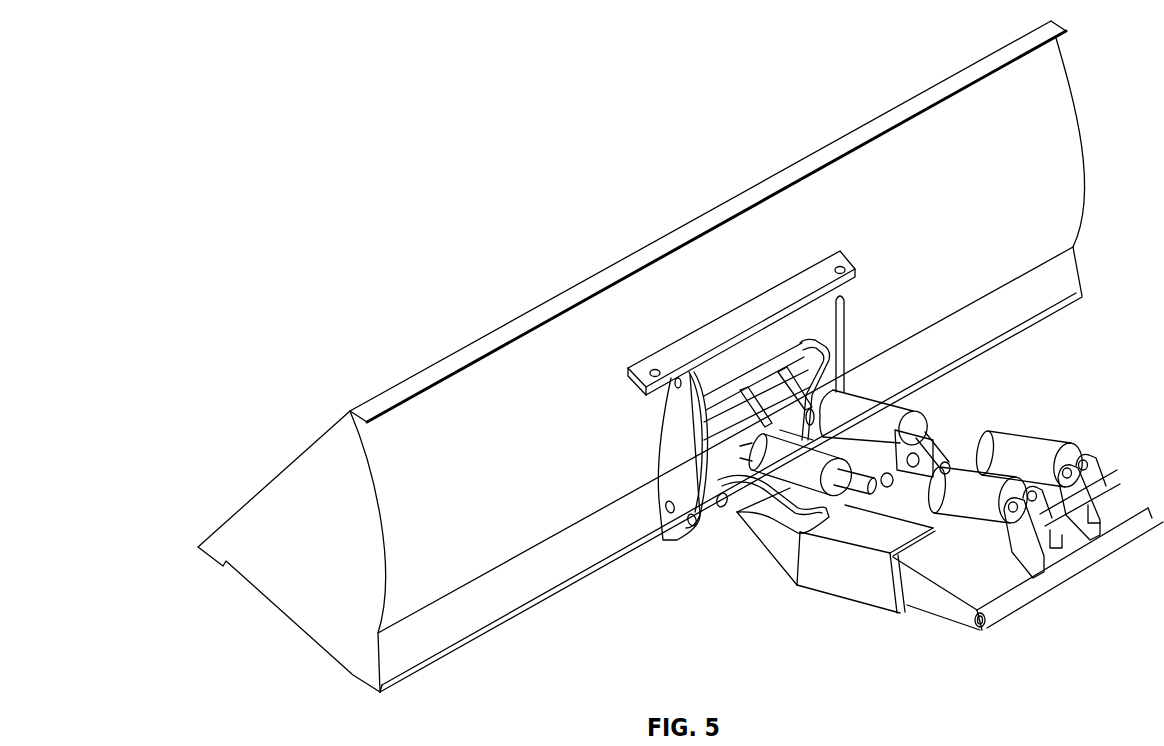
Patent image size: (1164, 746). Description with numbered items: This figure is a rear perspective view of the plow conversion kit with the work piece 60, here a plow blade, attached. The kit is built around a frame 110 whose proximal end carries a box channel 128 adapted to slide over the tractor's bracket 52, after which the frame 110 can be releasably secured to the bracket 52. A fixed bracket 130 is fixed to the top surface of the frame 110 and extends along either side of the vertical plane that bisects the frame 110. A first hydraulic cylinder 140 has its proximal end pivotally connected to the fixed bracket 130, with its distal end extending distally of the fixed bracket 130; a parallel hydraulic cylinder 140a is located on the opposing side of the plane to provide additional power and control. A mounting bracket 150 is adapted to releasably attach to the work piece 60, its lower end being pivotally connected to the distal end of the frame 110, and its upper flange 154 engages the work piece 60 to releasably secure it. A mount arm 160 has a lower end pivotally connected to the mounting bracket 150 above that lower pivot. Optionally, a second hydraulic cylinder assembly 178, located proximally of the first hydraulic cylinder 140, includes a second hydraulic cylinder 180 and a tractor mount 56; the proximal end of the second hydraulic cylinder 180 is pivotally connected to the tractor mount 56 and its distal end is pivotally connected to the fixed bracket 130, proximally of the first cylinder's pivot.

The work piece 60 is at (830, 143).
The upper flange 154 is at (847, 253).
The mount arm 160 is at (840, 322).
The mounting bracket 150 is at (688, 537).
The first hydraulic cylinder 140 is at (767, 507).
The hydraulic cylinder 140a is at (912, 397).
The second hydraulic cylinder 180 is at (953, 480).
The second hydraulic cylinder assembly 178 is at (965, 510).
The tractor mount 56 is at (1100, 468).
The fixed bracket 130 is at (885, 507).
The frame 110 is at (800, 588).
The bracket 52 is at (1033, 604).
The box channel 128 is at (903, 613).